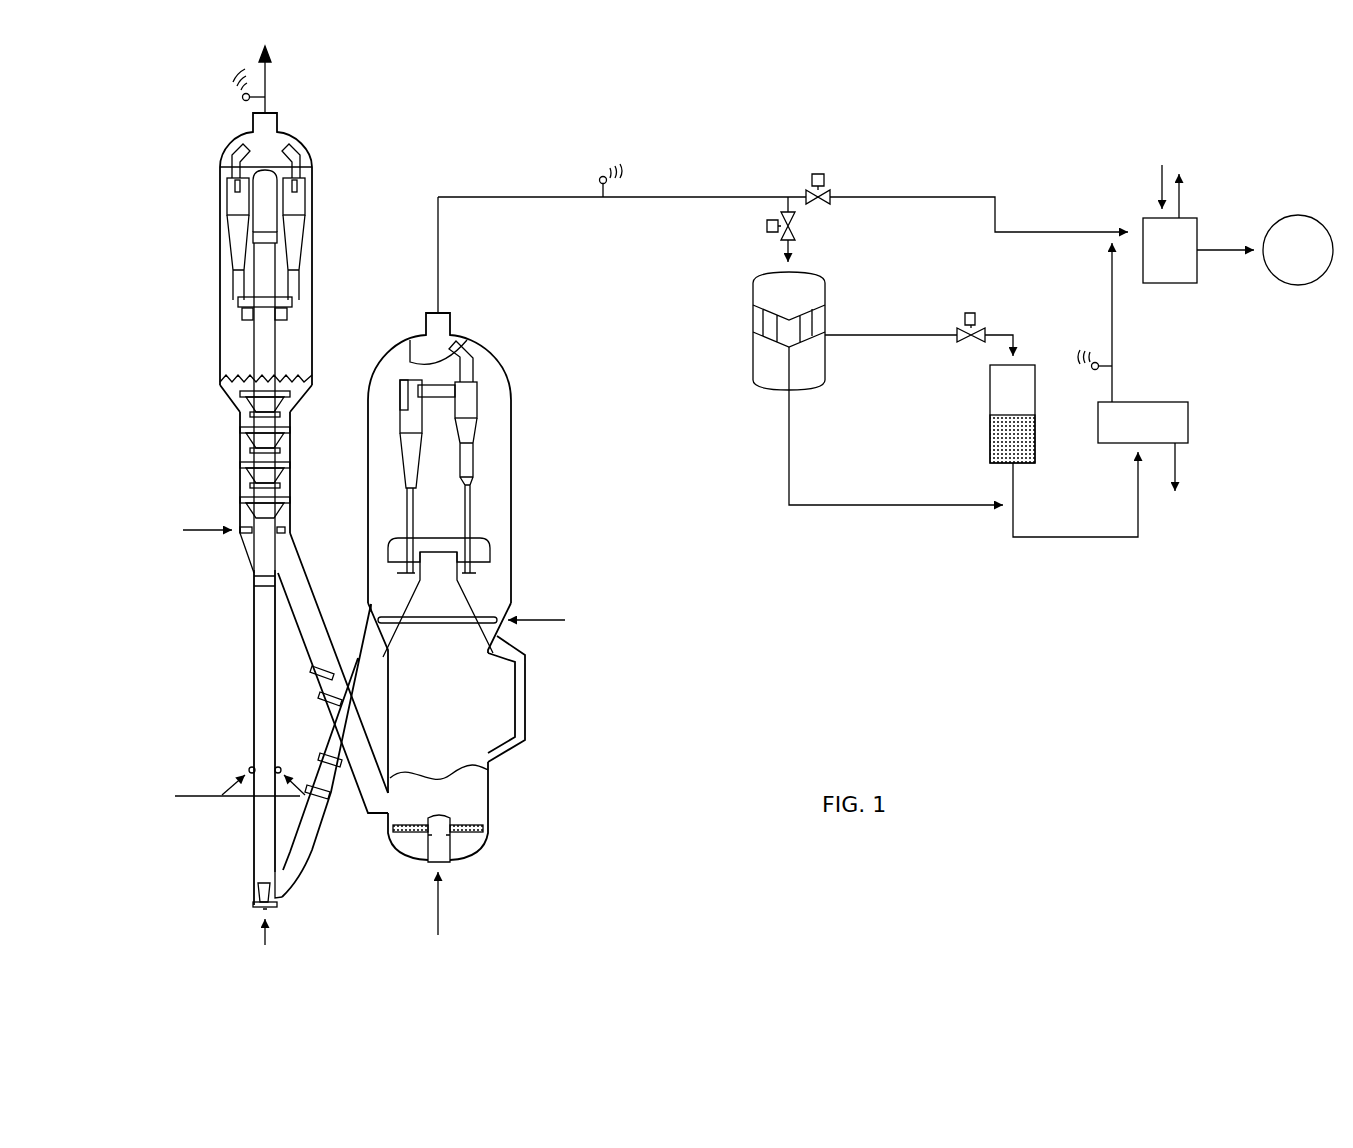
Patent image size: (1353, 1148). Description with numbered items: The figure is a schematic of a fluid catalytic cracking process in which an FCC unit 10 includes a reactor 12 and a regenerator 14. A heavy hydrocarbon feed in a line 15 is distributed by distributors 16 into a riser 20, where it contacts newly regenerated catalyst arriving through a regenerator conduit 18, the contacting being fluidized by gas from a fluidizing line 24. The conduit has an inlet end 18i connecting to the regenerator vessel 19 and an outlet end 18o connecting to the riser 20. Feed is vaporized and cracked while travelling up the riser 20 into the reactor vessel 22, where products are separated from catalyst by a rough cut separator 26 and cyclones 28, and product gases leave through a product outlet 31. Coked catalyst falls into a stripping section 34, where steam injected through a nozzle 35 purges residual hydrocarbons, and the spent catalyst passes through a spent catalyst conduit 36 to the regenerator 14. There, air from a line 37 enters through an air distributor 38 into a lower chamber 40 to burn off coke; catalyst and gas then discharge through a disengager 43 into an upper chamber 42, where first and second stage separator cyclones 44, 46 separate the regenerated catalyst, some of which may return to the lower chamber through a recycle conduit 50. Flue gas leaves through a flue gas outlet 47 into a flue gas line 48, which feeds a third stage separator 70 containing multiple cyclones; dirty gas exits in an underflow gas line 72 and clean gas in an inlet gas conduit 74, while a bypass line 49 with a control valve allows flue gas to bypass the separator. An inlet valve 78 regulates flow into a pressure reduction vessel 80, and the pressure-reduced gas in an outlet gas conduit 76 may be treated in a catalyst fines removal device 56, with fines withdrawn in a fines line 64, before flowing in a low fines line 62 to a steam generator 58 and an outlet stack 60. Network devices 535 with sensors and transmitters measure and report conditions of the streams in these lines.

The FCC unit 10 is at (120, 137).
The reactor 12 is at (322, 146).
The regenerator 14 is at (545, 335).
The line 15 is at (203, 798).
The distributors 16 is at (250, 766).
The regenerator conduit 18 is at (325, 803).
The inlet end 18i is at (370, 612).
The outlet end 18o is at (278, 896).
The regenerator vessel 19 is at (513, 394).
The riser 20 is at (277, 660).
The reactor vessel 22 is at (312, 322).
The fluidizing line 24 is at (267, 950).
The rough cut separator 26 is at (281, 353).
The cyclones 28 is at (222, 211).
The product outlet 31 is at (275, 114).
The stripping section 34 is at (240, 469).
The nozzle 35 is at (240, 535).
The spent catalyst conduit 36 is at (300, 576).
The line 37 is at (441, 912).
The air distributor 38 is at (455, 838).
The lower chamber 40 is at (408, 845).
The upper chamber 42 is at (513, 478).
The disengager 43 is at (488, 566).
The first stage separator cyclone 44 is at (400, 430).
The second stage separator cyclone 46 is at (478, 428).
The flue gas outlet 47 is at (450, 318).
The flue gas line 48 is at (440, 228).
The bypass line 49 is at (872, 204).
The recycle conduit 50 is at (528, 723).
The catalyst fines removal device 56 is at (1143, 422).
The steam generator 58 is at (1198, 224).
The outlet stack 60 is at (1298, 250).
The low fines line 62 is at (1113, 312).
The fines line 64 is at (1176, 473).
The third stage separator 70 is at (753, 332).
The underflow gas line 72 is at (790, 432).
The inlet gas conduit 74 is at (838, 335).
The outlet gas conduit 76 is at (1013, 485).
The inlet valve 78 is at (498, 616).
The pressure reduction vessel 80 is at (990, 378).
The network devices 535 is at (257, 93).